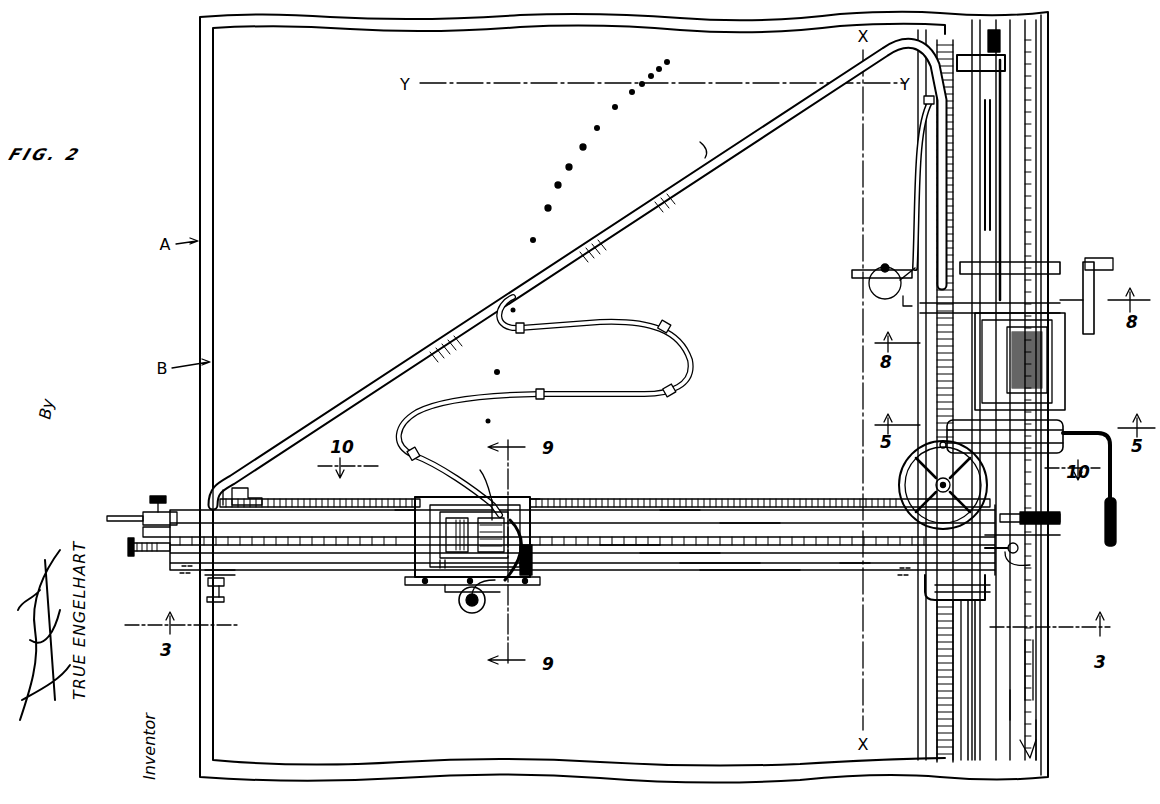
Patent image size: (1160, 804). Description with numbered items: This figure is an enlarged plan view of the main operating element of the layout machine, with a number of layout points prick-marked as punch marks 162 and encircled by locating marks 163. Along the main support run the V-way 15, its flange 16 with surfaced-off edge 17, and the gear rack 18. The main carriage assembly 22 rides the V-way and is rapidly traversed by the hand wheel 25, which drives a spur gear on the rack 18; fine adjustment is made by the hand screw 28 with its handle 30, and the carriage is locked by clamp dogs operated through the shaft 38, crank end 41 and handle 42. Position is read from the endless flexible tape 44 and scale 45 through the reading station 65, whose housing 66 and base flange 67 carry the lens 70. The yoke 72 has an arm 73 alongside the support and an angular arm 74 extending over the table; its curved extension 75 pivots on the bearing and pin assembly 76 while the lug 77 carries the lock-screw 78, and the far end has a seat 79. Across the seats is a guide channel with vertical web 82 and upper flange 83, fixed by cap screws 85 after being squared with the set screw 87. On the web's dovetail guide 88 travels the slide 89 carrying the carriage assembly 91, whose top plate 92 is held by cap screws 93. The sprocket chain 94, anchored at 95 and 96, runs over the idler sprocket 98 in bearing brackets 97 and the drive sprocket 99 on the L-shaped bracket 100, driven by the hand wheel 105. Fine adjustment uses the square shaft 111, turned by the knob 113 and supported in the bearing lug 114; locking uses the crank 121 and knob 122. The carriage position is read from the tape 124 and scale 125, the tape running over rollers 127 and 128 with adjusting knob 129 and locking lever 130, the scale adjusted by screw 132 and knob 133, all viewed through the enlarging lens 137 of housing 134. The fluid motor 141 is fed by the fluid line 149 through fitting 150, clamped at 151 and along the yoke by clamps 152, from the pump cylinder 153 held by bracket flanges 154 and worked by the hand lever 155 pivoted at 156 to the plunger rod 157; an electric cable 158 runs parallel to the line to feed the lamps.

The V-way 15 is at (960, 665).
The flange 16 is at (1032, 746).
The surfaced-off outer edge 17 is at (1040, 730).
The gear rack 18 is at (938, 697).
The main carriage assembly 22 is at (1050, 442).
The hand wheel 25 is at (1090, 264).
The hand screw 28 is at (1000, 258).
The handle 30 is at (1000, 230).
The shaft 38 is at (1104, 430).
The crank end 41 is at (1113, 480).
The handle 42 is at (1115, 542).
The endless flexible tape 44 is at (1030, 660).
The scale 45 is at (1015, 700).
The reading station 65 is at (1060, 388).
The housing 66 is at (1045, 395).
The base flange 67 is at (1045, 367).
The lens 70 is at (1048, 348).
The yoke 72 is at (695, 140).
The arm 73 is at (919, 188).
The arm 74 is at (618, 229).
The curved extension 75 is at (925, 586).
The tapered bearing and pin assembly 76 is at (967, 615).
The lug 77 is at (1005, 62).
The lock-screw 78 is at (1000, 46).
The seat 79 is at (240, 575).
The vertical web 82 is at (718, 564).
The upper horizontal flange 83 is at (681, 554).
The cap screws 85 is at (905, 574).
The set screw 87 is at (220, 597).
The dovetail guide 88 is at (757, 571).
The slide 89 is at (541, 584).
The carriage assembly 91 is at (431, 496).
The top plate 92 is at (415, 556).
The cap screws 93 is at (430, 585).
The sprocket chain 94 is at (675, 501).
The chain end attachment 95 is at (541, 500).
The chain end attachment 96 is at (415, 500).
The bearing brackets 97 is at (246, 499).
The idler sprocket 98 is at (212, 496).
The drive sprocket 99 is at (903, 497).
The L-shaped bracket 100 is at (1040, 535).
The hand wheel 105 is at (850, 565).
The fine adjustment shaft 111 is at (740, 508).
The knob 113 is at (1060, 518).
The bearing lug 114 is at (278, 500).
The crank 121 is at (1030, 562).
The knob 122 is at (1020, 548).
The flexible tape 124 is at (615, 507).
The scale 125 is at (628, 548).
The roller 127 is at (945, 592).
The roller 128 is at (143, 530).
The knob 129 is at (158, 496).
The lever 130 is at (128, 516).
The screw 132 is at (155, 551).
The knob 133 is at (128, 552).
The housing 134 is at (440, 561).
The enlarging lens 137 is at (500, 500).
The fluid motor 141 is at (456, 625).
The flexible fluid line 149 is at (540, 398).
The fitting 150 is at (470, 614).
The clamp 151 is at (513, 586).
The clamps 152 is at (926, 101).
The pump cylinder 153 is at (870, 296).
The bracket flanges 154 is at (904, 306).
The hand lever 155 is at (1045, 270).
The pivot 156 is at (853, 278).
The plunger rod 157 is at (878, 266).
The electric cable 158 is at (486, 472).
The punch marks 162 is at (567, 166).
The locating marks 163 is at (558, 206).